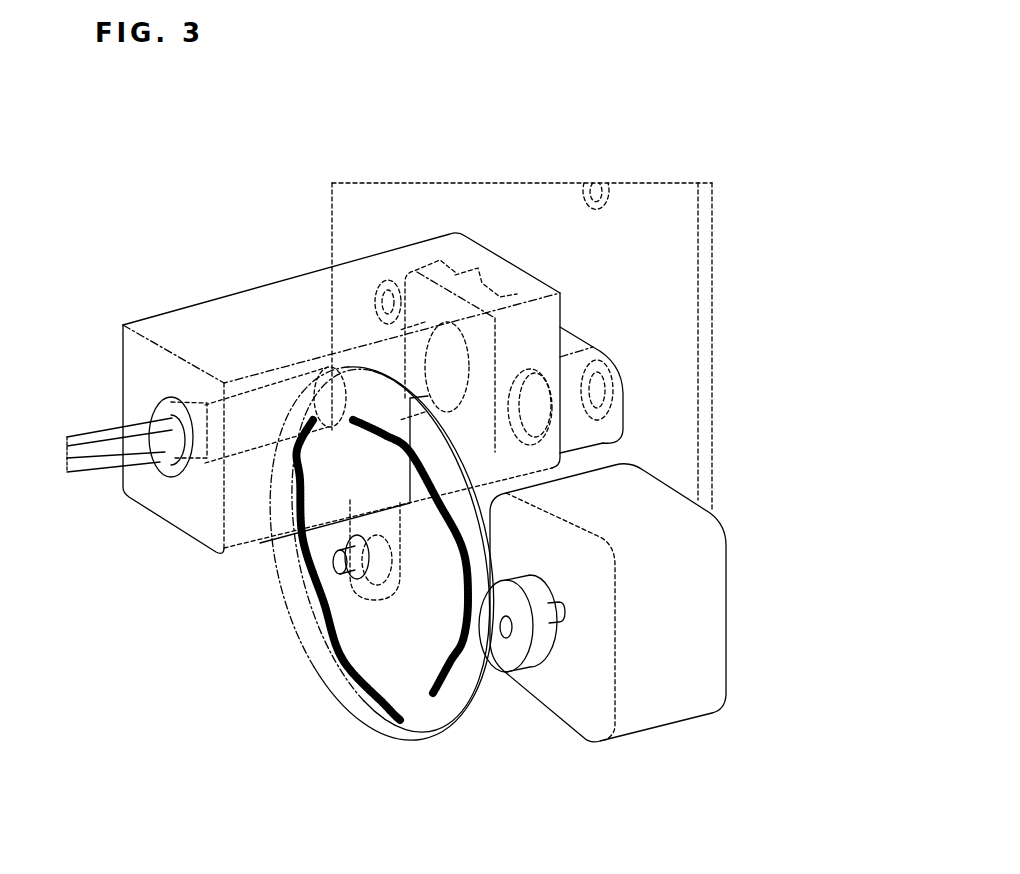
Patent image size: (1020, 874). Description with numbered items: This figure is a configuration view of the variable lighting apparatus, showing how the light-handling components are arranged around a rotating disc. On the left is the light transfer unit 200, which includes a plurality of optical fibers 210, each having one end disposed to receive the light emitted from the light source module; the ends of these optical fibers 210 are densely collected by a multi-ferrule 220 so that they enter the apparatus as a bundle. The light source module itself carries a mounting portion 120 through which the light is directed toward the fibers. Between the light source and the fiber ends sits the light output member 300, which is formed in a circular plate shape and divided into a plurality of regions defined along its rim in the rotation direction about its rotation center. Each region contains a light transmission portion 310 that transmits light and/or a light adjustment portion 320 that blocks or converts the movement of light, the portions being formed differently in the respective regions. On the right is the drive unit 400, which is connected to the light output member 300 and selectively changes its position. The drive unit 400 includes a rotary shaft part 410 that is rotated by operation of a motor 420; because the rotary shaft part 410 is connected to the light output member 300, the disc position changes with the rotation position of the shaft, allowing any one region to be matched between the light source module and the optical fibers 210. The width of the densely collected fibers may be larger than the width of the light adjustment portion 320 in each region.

The mounting boss of bracket 120 is at (427, 355).
The light transfer unit 200 is at (156, 392).
The optical fibers 210 is at (110, 437).
The multi-ferrule 220 is at (180, 463).
The light output member 300 is at (321, 694).
The light transmission portion 310 is at (452, 690).
The light adjustment portion 320 is at (386, 715).
The drive unit 400 is at (740, 604).
The rotary shaft part 410 is at (517, 645).
The motor 420 is at (663, 682).